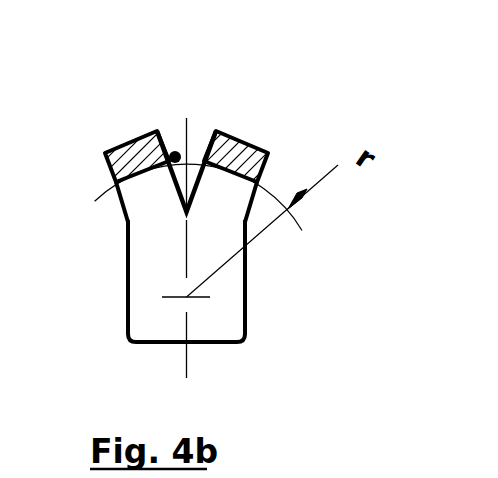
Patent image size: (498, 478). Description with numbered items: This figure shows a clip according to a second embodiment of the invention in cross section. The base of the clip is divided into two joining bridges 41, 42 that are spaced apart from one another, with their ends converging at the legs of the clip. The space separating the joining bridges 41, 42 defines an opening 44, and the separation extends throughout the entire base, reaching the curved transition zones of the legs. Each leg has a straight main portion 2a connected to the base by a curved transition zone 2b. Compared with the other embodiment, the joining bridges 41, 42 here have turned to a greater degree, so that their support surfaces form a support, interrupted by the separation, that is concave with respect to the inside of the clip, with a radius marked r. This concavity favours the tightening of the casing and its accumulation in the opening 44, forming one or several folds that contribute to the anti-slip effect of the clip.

The joining bridge 41 is at (118, 140).
The joining bridge 42 is at (250, 147).
The opening 44 is at (172, 150).
The straight main portion 2a is at (127, 200).
The curved transition zone 2b is at (130, 266).